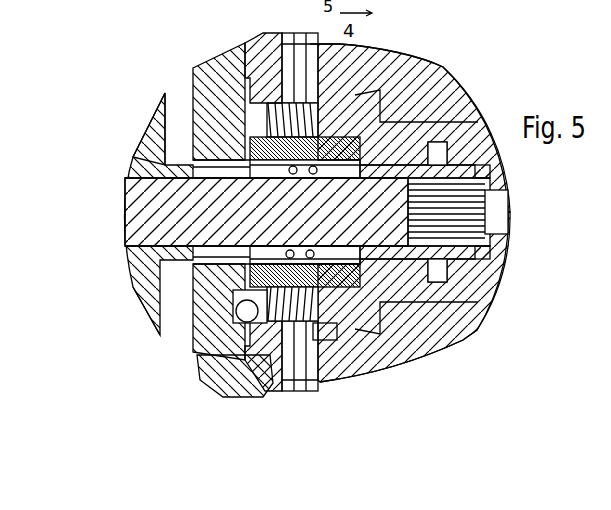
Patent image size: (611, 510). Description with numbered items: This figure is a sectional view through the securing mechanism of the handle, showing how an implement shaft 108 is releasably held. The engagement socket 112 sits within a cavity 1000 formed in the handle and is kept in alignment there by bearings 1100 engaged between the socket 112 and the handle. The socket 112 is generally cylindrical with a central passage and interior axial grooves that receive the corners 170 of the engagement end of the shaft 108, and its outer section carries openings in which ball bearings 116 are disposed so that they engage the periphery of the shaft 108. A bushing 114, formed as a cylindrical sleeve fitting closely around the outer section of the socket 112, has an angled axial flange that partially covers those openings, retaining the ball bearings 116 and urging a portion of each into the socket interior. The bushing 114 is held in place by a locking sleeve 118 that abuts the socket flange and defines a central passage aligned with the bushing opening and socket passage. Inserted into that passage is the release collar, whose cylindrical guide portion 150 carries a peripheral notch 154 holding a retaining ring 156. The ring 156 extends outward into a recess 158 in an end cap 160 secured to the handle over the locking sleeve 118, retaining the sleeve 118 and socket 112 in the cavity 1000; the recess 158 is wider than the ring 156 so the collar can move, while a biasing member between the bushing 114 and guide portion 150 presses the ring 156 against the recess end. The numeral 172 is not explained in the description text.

The shaft 108 is at (111, 226).
The engagement socket 112 is at (470, 212).
The bushing 114 is at (358, 74).
The ball bearings 116 is at (345, 266).
The locking sleeve 118 is at (190, 150).
The guide portion 150 is at (172, 106).
The peripheral notch 154 is at (162, 162).
The retaining ring 156 is at (230, 270).
The recess 158 is at (236, 274).
The end cap 160 is at (248, 300).
The corners 170 is at (257, 300).
The shoulder 172 is at (123, 284).
The cavity 1000 is at (436, 141).
The bearings 1100 is at (476, 297).